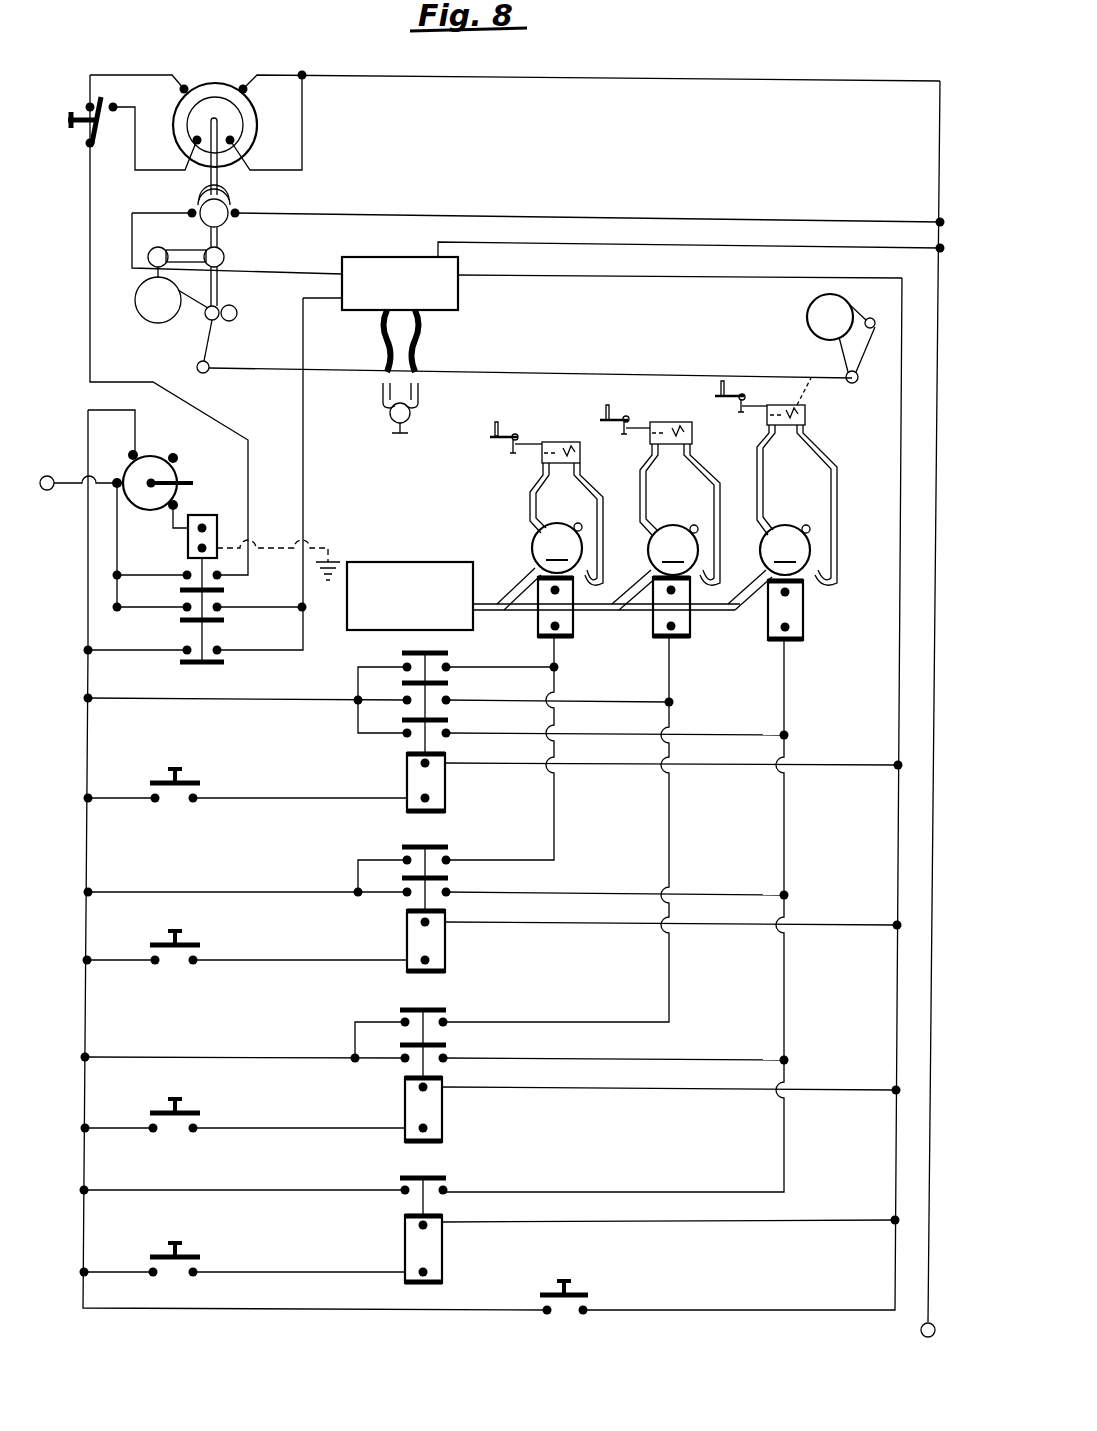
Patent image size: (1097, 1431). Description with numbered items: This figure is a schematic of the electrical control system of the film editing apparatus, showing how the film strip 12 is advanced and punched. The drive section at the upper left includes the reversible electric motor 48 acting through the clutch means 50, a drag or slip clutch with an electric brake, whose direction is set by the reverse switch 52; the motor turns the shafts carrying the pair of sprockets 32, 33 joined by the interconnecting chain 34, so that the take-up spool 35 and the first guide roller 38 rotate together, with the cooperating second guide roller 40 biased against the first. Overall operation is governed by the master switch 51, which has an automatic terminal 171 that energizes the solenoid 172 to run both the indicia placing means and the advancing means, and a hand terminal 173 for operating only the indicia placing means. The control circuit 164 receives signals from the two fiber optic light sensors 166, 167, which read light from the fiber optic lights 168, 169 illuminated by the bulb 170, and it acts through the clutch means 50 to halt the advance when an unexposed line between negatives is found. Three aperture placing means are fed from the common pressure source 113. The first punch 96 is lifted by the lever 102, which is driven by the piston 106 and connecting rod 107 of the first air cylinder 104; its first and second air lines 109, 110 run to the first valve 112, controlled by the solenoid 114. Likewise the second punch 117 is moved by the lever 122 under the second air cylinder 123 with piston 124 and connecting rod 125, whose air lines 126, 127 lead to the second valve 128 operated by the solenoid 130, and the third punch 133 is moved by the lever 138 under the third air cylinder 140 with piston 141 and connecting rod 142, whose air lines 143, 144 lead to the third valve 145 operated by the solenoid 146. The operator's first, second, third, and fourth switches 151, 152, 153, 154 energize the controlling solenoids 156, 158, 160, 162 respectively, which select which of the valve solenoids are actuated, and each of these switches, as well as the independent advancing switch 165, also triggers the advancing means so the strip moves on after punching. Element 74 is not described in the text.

The film strip 12 is at (500, 376).
The sprocket 32 is at (148, 262).
The sprocket 33 is at (226, 258).
The interconnecting chain 34 is at (184, 254).
The take-up spool 35 is at (168, 320).
The first guide roller 38 is at (210, 321).
The second guide roller 40 is at (238, 313).
The reversible electric motor 48 is at (240, 118).
The clutch means 50 is at (228, 207).
The master switch 51 is at (184, 446).
The reverse switch 52 is at (98, 140).
The link pivot 74 is at (214, 352).
The first punch 96 is at (722, 380).
The lever 102 is at (738, 412).
The first air cylinder 104 is at (786, 404).
The piston 106 is at (806, 382).
The connecting rod 107 is at (760, 404).
The first air line 109 is at (757, 470).
The second air line 110 is at (830, 472).
The first valve 112 is at (812, 554).
The pressure source 113 is at (432, 562).
The solenoid 114 is at (805, 610).
The second punch 117 is at (606, 412).
The lever 122 is at (618, 420).
The second air cylinder 123 is at (668, 422).
The piston 124 is at (674, 420).
The connecting rod 125 is at (658, 422).
The first air line 126 is at (640, 486).
The second air line 127 is at (712, 484).
The second valve 128 is at (654, 556).
The solenoid 130 is at (653, 627).
The third punch 133 is at (498, 420).
The lever 138 is at (492, 437).
The third air cylinder 140 is at (546, 440).
The piston 141 is at (584, 430).
The connecting rod 142 is at (524, 442).
The first air line 143 is at (530, 490).
The second air line 144 is at (594, 500).
The third valve 145 is at (532, 552).
The solenoid 146 is at (538, 624).
The first switch 151 is at (196, 1256).
The second switch 152 is at (196, 1114).
The third switch 153 is at (196, 784).
The fourth switch 154 is at (196, 946).
The controlling solenoid 156 is at (442, 1256).
The controlling solenoid 158 is at (442, 1116).
The controlling solenoid 160 is at (444, 794).
The controlling solenoid 162 is at (444, 954).
The control circuit 164 is at (402, 256).
The advancing switch 165 is at (584, 1296).
The fiber optic light sensor 166 is at (382, 364).
The fiber optic light sensor 167 is at (422, 366).
The fiber optic light 168 is at (383, 400).
The fiber optic light 169 is at (418, 405).
The bulb 170 is at (392, 424).
The automatic terminal 171 is at (172, 512).
The solenoid 172 is at (219, 546).
The hand terminal 173 is at (120, 452).